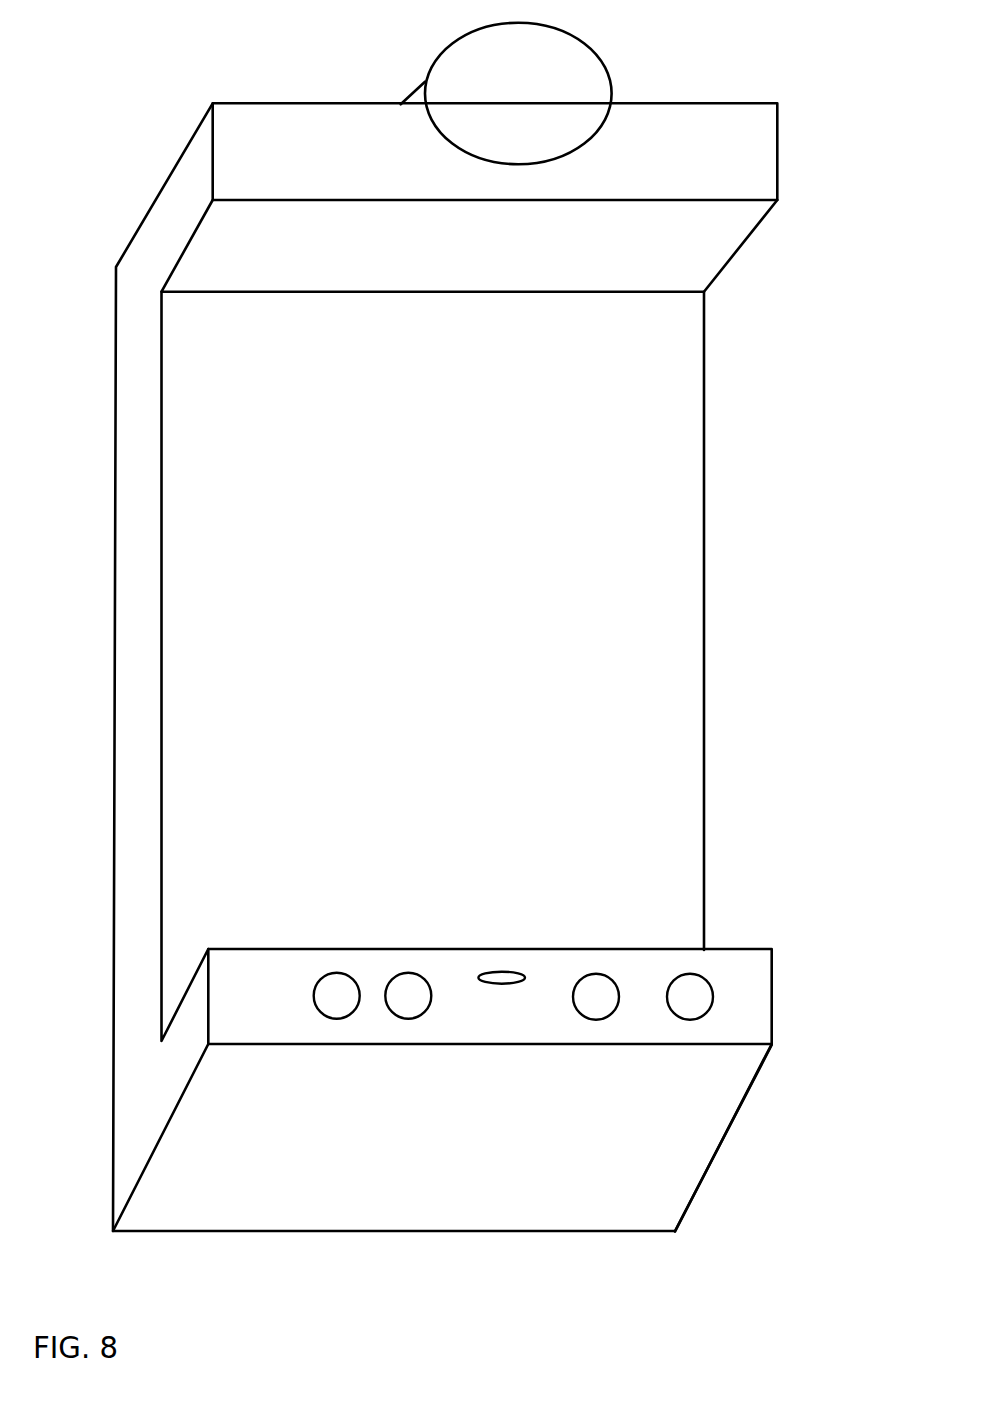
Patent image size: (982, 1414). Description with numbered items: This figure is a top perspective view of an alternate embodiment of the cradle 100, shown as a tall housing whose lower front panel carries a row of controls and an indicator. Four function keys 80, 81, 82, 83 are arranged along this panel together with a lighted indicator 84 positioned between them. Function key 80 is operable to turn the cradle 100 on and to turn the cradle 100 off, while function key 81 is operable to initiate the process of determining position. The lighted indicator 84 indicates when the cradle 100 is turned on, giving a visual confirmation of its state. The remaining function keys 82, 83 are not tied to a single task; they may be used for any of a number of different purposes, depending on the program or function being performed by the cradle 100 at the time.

The cradle 100 is at (681, 435).
The function key 80 is at (337, 996).
The function key 81 is at (418, 995).
The function key 82 is at (606, 996).
The function key 83 is at (700, 996).
The lighted indicator 84 is at (513, 975).